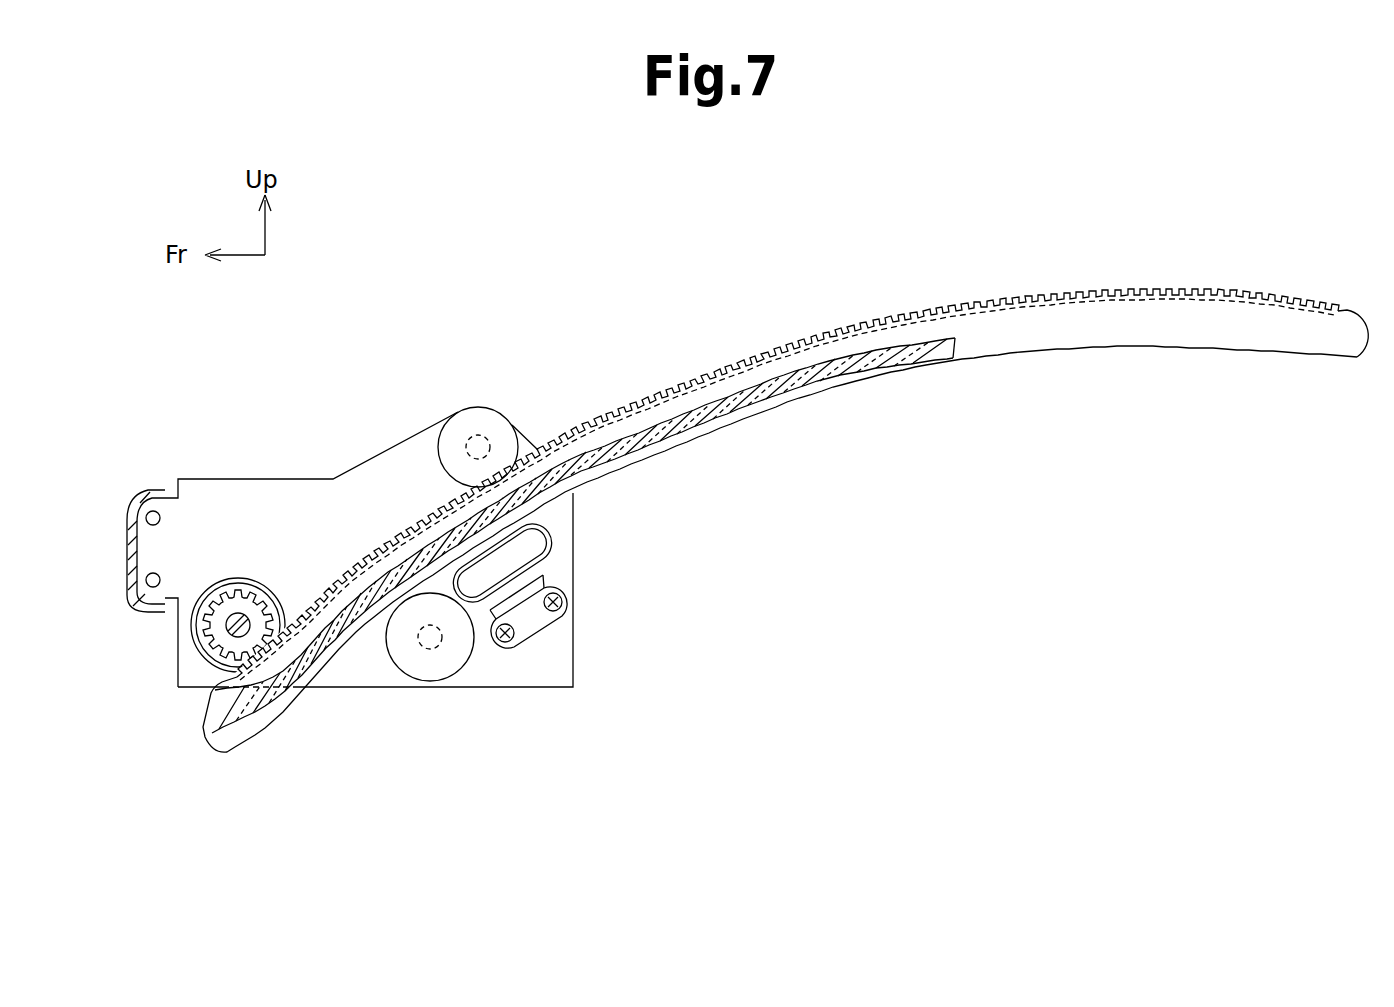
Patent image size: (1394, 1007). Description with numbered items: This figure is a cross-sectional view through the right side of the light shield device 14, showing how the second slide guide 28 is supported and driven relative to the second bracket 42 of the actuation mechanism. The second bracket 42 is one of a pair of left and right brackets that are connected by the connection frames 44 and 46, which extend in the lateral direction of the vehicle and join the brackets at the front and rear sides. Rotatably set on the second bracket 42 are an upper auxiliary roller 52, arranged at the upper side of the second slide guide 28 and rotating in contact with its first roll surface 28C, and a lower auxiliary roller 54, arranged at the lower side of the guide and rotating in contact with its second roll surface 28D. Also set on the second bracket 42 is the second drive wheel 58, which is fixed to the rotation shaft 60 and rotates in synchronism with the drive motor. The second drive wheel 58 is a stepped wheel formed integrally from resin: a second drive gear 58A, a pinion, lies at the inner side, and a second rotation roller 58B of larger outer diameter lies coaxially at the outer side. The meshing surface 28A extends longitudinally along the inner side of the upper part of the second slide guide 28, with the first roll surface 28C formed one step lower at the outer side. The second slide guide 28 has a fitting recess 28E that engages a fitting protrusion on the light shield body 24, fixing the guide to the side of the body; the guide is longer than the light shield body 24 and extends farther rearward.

The light shield device 14 is at (785, 479).
The light shield body 24 is at (853, 373).
The second slide guide 28 is at (1083, 367).
The meshing surface 28A is at (370, 560).
The first roll surface 28C is at (577, 478).
The second roll surface 28D is at (348, 652).
The fitting recess 28E is at (912, 346).
The second bracket 42 is at (404, 440).
The connection frame 44 is at (130, 548).
The connection frame 46 is at (553, 532).
The upper auxiliary roller 52 is at (490, 406).
The lower auxiliary roller 54 is at (468, 662).
The second drive wheel 58 is at (170, 632).
The second drive gear 58A is at (196, 624).
The second rotation roller 58B is at (198, 646).
The rotation shaft 60 is at (248, 606).